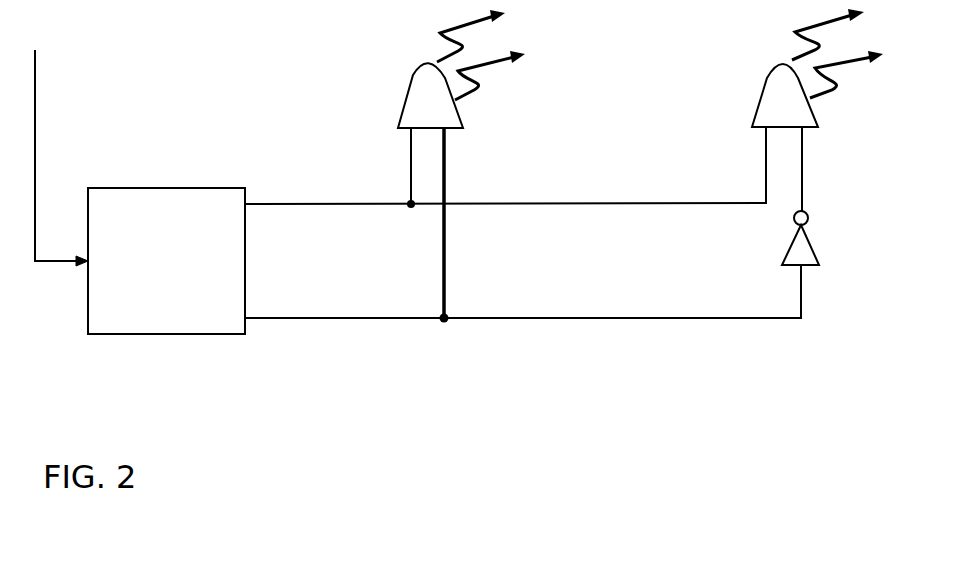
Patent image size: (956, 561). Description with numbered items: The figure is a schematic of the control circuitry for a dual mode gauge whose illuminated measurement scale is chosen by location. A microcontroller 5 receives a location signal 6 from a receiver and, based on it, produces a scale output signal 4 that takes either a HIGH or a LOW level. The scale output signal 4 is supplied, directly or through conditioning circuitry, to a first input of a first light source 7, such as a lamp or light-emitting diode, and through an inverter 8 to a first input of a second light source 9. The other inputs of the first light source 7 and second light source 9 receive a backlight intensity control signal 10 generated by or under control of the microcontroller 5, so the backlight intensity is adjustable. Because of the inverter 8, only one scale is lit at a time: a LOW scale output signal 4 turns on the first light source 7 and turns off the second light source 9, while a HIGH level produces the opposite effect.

The scale output signal 4 is at (638, 318).
The microcontroller 5 is at (137, 335).
The location signal 6 is at (36, 148).
The first light source 7 is at (402, 108).
The inverter 8 is at (790, 243).
The second light source 9 is at (760, 99).
The backlight intensity control signal 10 is at (567, 204).